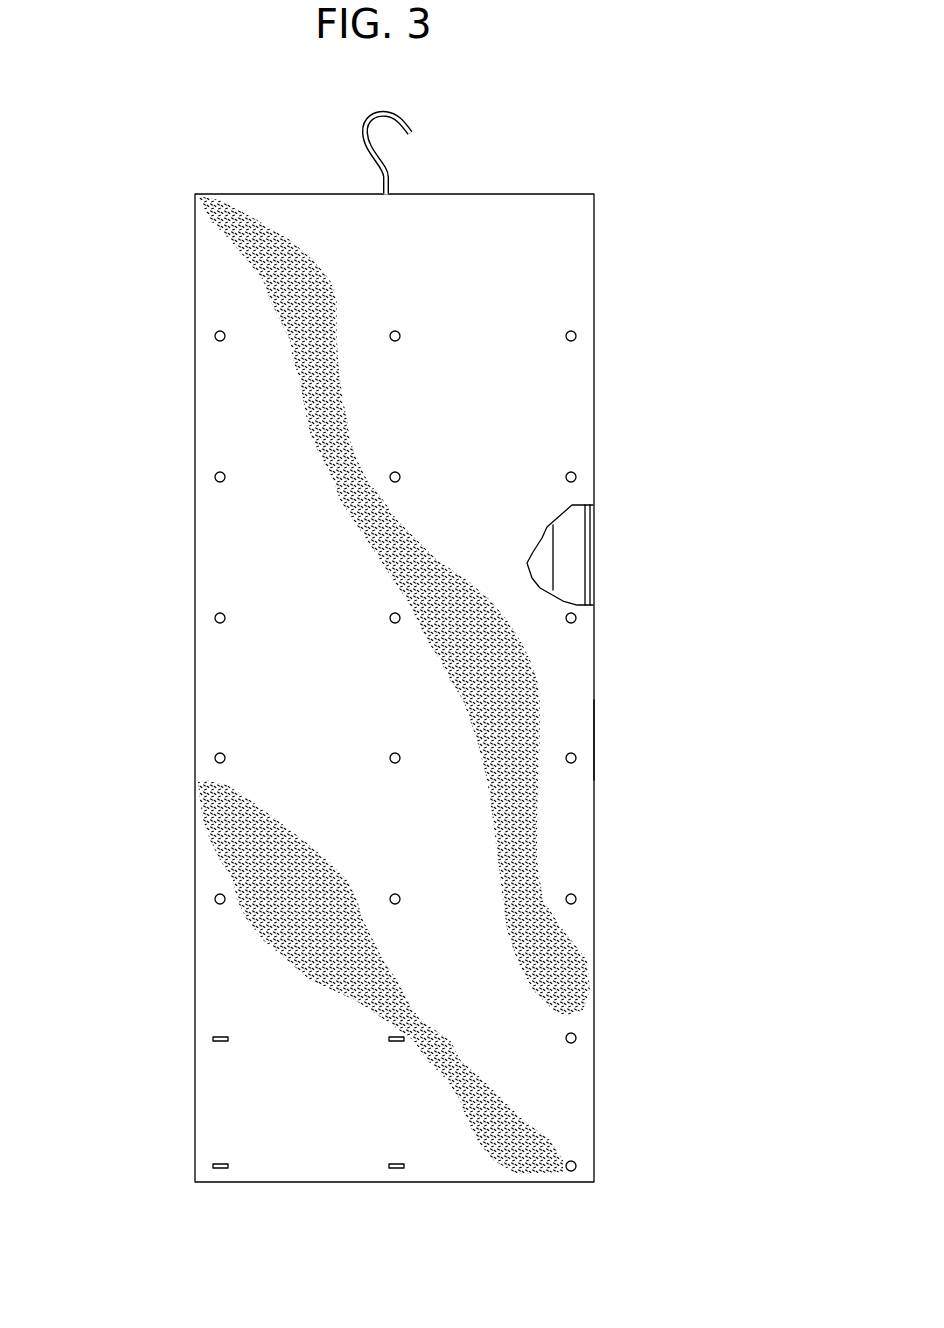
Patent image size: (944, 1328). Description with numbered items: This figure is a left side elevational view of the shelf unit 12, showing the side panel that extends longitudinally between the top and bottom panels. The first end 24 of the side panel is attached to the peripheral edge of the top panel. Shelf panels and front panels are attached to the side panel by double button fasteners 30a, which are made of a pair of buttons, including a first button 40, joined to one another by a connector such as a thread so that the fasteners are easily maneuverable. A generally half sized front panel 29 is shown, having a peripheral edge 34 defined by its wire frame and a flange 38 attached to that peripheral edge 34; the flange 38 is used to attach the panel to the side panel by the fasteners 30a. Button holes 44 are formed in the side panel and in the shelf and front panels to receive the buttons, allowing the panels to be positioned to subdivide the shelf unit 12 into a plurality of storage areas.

The shelf unit 12 is at (515, 194).
The first end of the side panel 24 is at (595, 740).
The half sized front panel 29 is at (593, 556).
The double button fasteners 30a is at (567, 331).
The peripheral edge 34 is at (592, 590).
The flange 38 is at (577, 532).
The first button 40 is at (216, 333).
The button holes 44 is at (395, 1043).